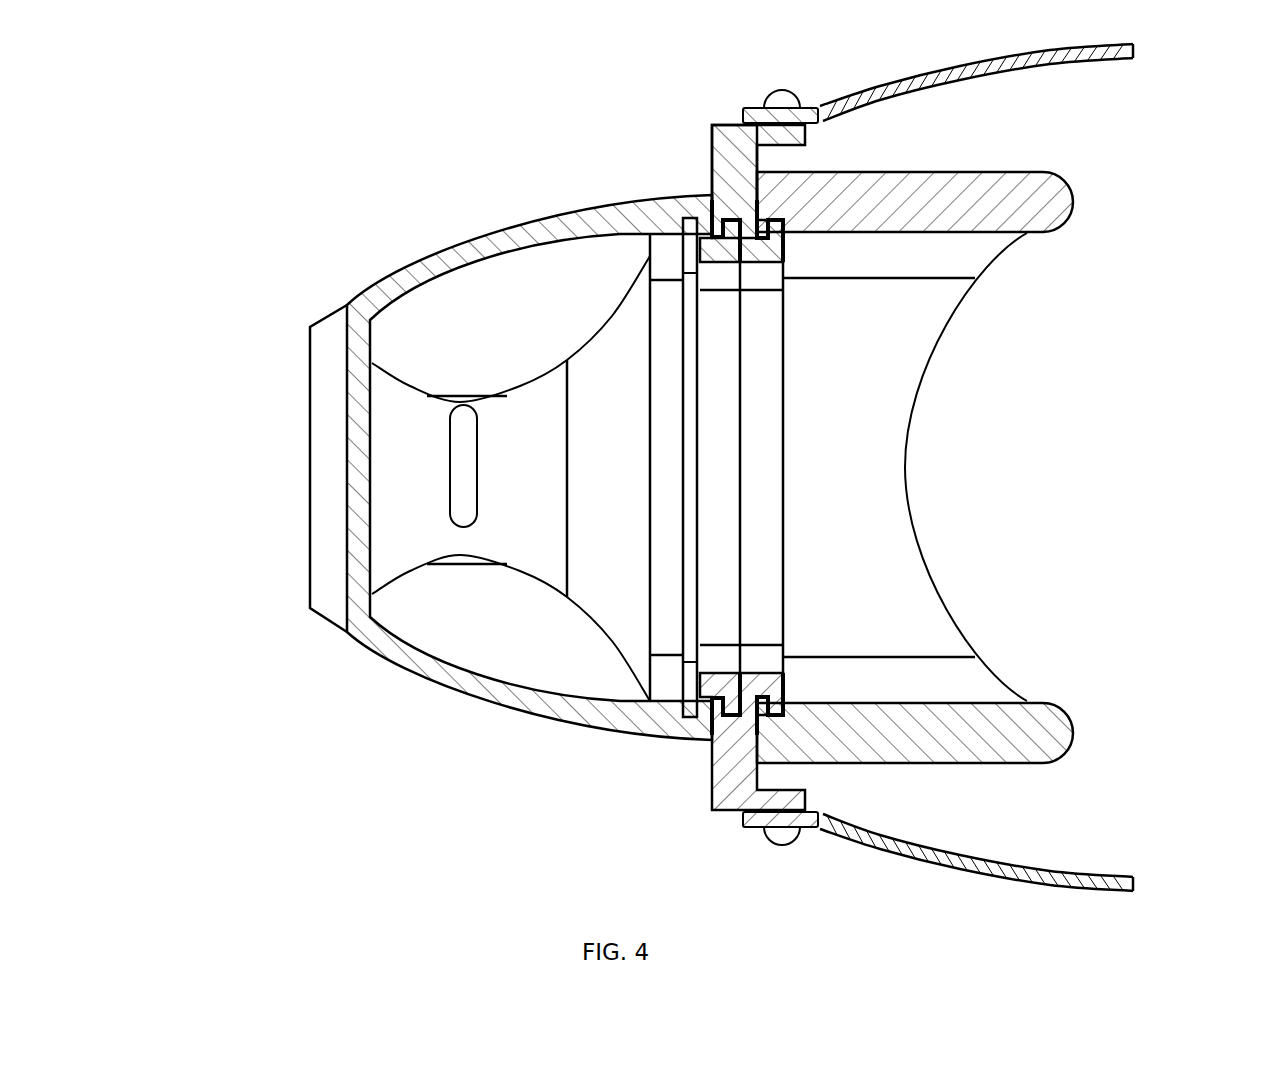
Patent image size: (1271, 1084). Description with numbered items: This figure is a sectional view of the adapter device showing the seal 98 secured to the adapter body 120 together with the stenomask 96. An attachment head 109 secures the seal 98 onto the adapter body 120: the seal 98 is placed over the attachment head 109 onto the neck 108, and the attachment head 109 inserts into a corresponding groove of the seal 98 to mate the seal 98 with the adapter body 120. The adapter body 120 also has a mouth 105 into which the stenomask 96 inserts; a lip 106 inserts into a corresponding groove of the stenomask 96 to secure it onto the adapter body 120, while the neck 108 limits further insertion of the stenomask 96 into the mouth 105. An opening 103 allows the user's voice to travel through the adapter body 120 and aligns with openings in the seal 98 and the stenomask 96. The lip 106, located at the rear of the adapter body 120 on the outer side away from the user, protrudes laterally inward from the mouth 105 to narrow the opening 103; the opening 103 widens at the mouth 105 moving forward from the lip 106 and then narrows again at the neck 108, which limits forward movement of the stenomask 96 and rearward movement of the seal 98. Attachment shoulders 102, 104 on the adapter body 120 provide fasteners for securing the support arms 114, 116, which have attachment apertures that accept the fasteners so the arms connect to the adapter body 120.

The stenomask 96 is at (355, 638).
The seal 98 is at (1040, 192).
The attachment shoulder 102 is at (715, 148).
The opening 103 is at (745, 468).
The attachment shoulder 104 is at (730, 787).
The mouth 105 is at (732, 720).
The lip 106 is at (700, 703).
The neck 108 is at (772, 702).
The attachment head 109 is at (788, 702).
The support arm 114 is at (1080, 58).
The support arm 116 is at (1110, 870).
The adapter body 120 is at (717, 177).